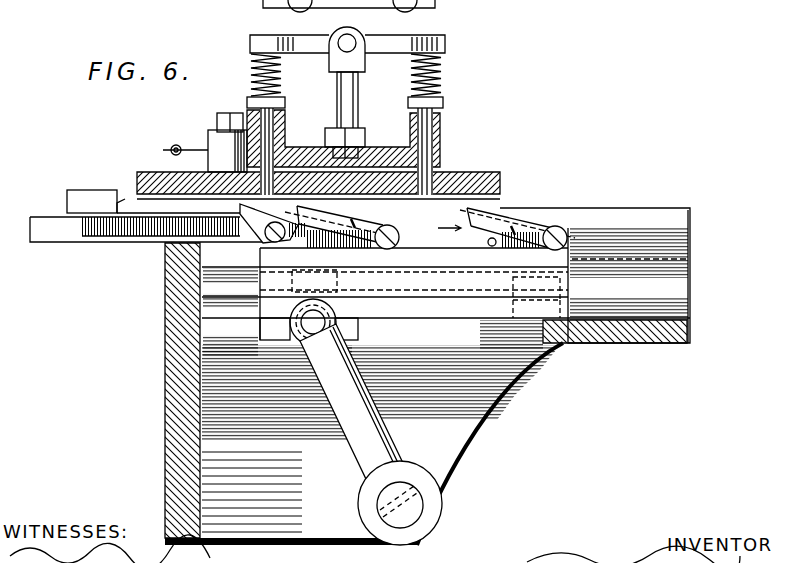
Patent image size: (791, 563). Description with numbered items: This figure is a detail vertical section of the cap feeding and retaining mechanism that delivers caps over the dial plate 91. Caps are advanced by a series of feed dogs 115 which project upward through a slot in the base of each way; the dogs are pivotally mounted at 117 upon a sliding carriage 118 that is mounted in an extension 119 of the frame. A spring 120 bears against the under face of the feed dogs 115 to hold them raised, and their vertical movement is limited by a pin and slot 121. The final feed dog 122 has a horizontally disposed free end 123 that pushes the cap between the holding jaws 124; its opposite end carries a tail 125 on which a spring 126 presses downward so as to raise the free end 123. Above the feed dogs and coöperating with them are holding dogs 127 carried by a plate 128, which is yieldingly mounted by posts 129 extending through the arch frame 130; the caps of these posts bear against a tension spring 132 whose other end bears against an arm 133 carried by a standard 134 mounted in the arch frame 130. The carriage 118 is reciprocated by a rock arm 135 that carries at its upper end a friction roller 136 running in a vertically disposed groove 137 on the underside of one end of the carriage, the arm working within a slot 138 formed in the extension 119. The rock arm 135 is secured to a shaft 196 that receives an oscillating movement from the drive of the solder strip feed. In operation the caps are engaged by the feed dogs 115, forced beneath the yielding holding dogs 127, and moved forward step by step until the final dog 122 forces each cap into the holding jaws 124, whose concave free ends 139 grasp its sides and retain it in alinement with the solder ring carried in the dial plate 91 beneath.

The dial plate 91 is at (74, 233).
The feed dogs 115 is at (420, 208).
The pivot 117 is at (571, 229).
The sliding carriage 118 is at (446, 281).
The extension of the frame 119 is at (640, 320).
The spring 120 is at (508, 251).
The pin and slot 121 is at (545, 208).
The final feed dog 122 is at (262, 222).
The free end 123 is at (165, 213).
The holding jaws 124 is at (147, 153).
The tail 125 is at (283, 246).
The spring 126 is at (361, 247).
The holding dogs 127 is at (137, 190).
The plate 128 is at (441, 171).
The posts 129 is at (274, 133).
The arch frame 130 is at (390, 140).
The tension spring 132 is at (252, 63).
The arm 133 is at (393, 46).
The standard 134 is at (337, 86).
The rock arm 135 is at (385, 414).
The friction roller 136 is at (222, 132).
The groove 137 is at (353, 296).
The slot 138 is at (176, 145).
The concave free ends 139 is at (67, 212).
The shaft 196 is at (413, 513).